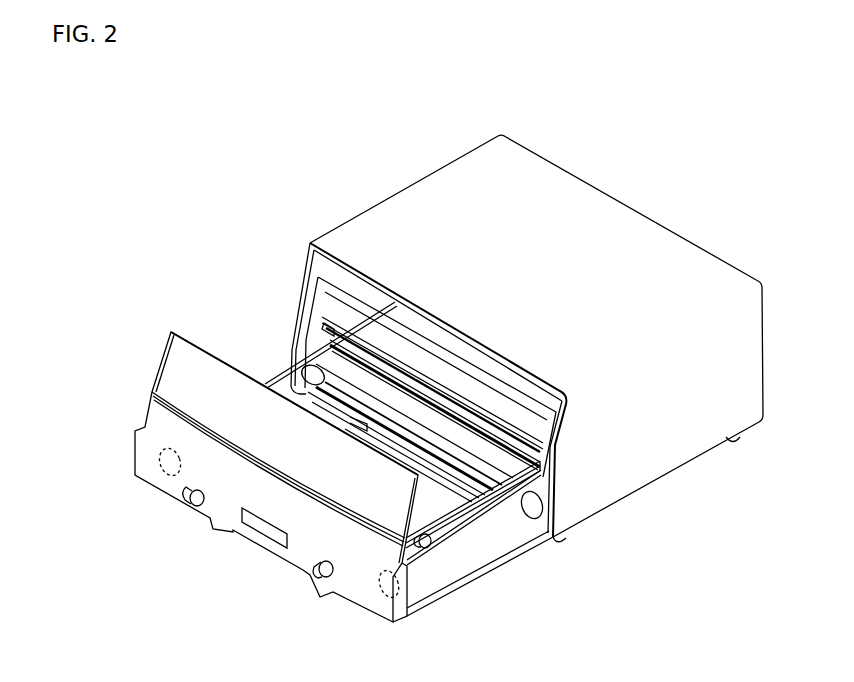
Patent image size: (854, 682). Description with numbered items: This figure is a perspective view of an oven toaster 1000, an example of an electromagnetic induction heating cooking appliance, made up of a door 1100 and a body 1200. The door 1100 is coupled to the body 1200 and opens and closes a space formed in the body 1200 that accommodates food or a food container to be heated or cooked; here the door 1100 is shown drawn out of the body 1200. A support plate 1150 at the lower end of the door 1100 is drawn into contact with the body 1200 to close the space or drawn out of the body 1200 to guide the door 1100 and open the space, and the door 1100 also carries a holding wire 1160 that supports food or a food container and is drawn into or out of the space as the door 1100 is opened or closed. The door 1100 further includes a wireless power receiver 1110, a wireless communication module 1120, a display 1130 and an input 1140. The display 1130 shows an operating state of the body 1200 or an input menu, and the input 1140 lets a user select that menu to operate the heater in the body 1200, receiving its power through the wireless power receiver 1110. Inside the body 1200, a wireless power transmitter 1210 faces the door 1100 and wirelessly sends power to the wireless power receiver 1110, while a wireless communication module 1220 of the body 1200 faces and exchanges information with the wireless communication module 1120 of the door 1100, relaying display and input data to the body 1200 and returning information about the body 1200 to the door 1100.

The oven toaster 1000 is at (278, 124).
The door 1100 is at (139, 403).
The wireless power receiver 1110 is at (384, 592).
The wireless communication module 1120 is at (167, 465).
The display 1130 is at (262, 530).
The input 1140 is at (318, 574).
The support plate 1150 is at (438, 574).
The holding wire 1160 is at (474, 506).
The body 1200 is at (586, 166).
The wireless power transmitter 1210 is at (529, 518).
The wireless communication module 1220 is at (304, 368).